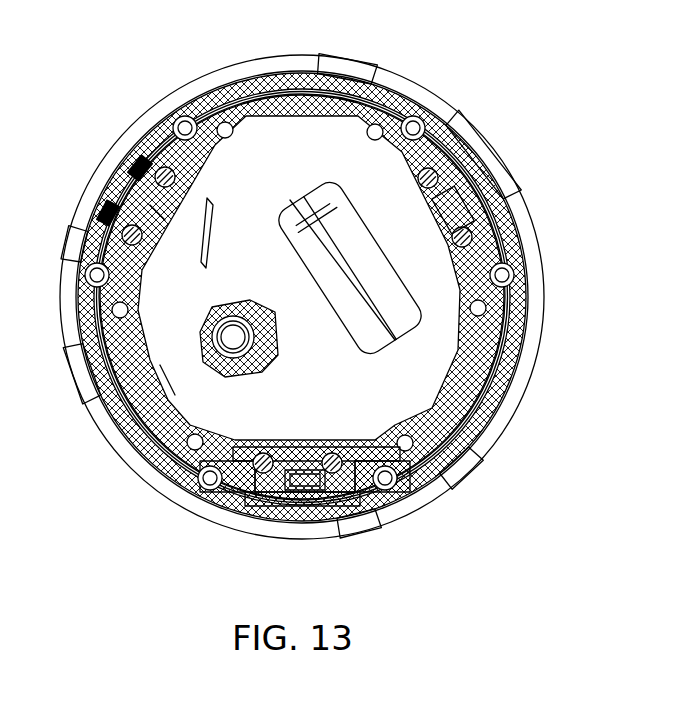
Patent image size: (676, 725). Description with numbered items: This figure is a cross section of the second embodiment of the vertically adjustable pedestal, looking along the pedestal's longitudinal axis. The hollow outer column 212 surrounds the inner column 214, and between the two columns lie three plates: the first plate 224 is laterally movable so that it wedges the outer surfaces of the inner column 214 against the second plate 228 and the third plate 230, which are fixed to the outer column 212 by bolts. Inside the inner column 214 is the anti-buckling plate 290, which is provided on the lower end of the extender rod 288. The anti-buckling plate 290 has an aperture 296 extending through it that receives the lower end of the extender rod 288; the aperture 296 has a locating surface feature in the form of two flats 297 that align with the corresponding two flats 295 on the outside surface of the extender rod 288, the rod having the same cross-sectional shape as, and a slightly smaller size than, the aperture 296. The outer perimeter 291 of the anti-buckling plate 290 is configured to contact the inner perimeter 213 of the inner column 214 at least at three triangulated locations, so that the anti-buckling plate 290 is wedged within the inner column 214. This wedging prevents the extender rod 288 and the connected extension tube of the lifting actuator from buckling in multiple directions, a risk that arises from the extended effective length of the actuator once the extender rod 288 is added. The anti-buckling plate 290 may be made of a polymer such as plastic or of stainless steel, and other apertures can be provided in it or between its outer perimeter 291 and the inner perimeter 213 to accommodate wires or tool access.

The outer column 212 is at (393, 98).
The inner perimeter 213 is at (205, 135).
The inner column 214 is at (167, 418).
The first plate 224 is at (140, 203).
The second plate 228 is at (340, 483).
The third plate 230 is at (480, 232).
The extender rod 288 is at (215, 378).
The anti-buckling plate 290 is at (443, 365).
The outer perimeter 291 is at (302, 110).
The flats 295 is at (130, 297).
The aperture 296 is at (188, 356).
The flats 297 is at (237, 306).